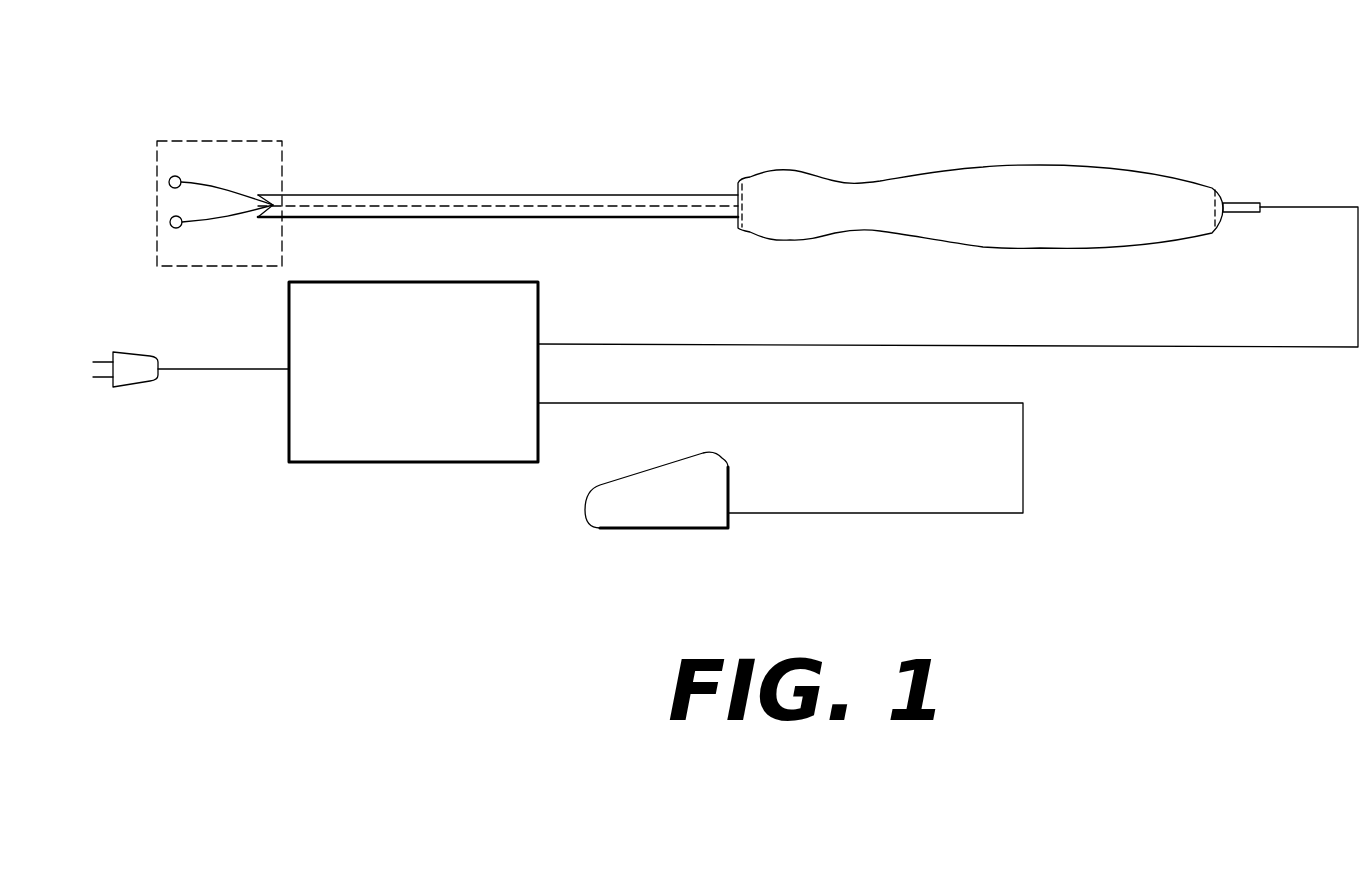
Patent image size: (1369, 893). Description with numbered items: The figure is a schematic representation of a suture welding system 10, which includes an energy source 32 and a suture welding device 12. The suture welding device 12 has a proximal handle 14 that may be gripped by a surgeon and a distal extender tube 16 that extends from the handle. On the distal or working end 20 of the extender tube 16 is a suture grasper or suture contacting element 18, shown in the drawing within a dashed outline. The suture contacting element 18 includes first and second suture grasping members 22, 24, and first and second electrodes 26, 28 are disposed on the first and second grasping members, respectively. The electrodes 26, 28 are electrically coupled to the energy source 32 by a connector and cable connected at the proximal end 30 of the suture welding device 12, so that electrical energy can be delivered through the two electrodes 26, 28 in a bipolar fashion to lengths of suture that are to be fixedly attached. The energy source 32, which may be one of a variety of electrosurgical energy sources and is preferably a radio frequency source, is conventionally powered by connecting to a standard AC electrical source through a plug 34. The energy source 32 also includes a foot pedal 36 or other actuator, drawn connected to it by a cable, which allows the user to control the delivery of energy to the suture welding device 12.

The suture welding system 10 is at (163, 492).
The suture welding device 12 is at (723, 145).
The proximal handle 14 is at (1055, 178).
The distal extender tube 16 is at (470, 198).
The suture contacting element 18 is at (264, 140).
The working end 20 is at (259, 194).
The first suture grasping member 22 is at (203, 180).
The second suture grasping member 24 is at (198, 222).
The first electrode 26 is at (169, 182).
The second electrode 28 is at (170, 222).
The proximal end 30 is at (1241, 203).
The energy source 32 is at (390, 465).
The plug 34 is at (132, 370).
The foot pedal 36 is at (640, 483).